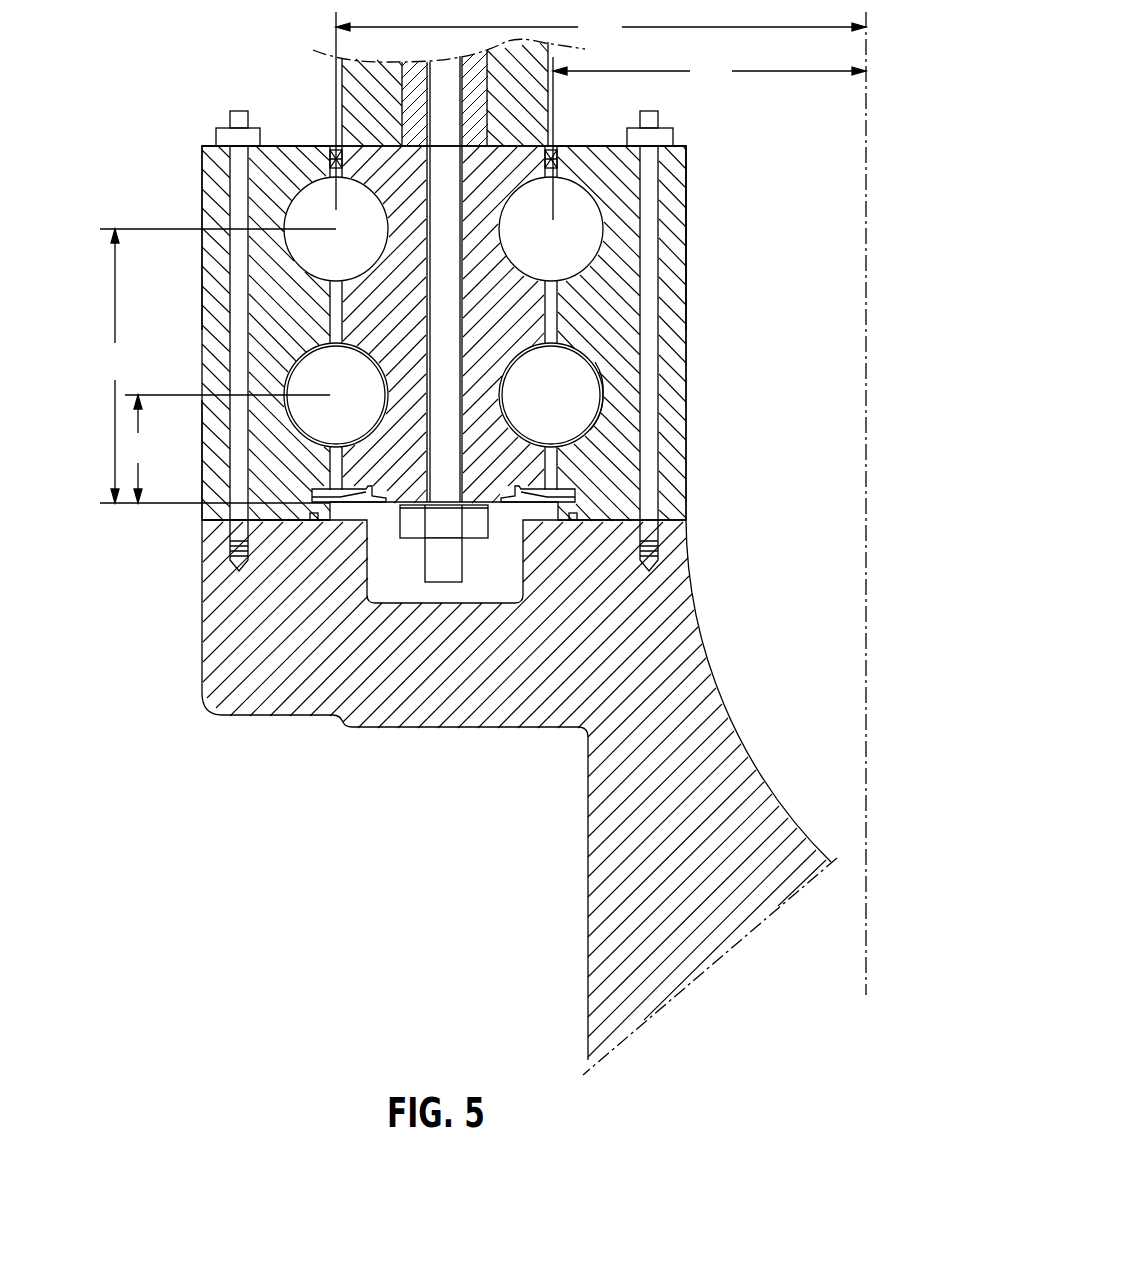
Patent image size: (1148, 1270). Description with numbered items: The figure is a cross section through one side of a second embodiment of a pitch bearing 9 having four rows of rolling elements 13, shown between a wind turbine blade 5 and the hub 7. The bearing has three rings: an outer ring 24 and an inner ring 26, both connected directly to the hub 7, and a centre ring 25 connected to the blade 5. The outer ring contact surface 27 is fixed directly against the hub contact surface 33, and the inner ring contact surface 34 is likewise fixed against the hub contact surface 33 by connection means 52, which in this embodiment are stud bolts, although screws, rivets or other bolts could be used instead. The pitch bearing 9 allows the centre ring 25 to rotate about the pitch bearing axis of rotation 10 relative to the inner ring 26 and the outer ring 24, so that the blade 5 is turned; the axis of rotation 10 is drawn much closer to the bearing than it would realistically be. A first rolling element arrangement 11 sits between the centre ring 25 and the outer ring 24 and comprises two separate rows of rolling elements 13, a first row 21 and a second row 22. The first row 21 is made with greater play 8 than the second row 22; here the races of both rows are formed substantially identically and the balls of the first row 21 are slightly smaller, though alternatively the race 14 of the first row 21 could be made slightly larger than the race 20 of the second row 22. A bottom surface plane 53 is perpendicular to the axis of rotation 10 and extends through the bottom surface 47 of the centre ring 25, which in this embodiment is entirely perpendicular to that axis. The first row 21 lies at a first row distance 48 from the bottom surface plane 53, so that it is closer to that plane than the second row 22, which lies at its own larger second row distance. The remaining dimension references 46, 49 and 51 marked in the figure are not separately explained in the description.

The blade 5 is at (368, 113).
The hub 7 is at (698, 794).
The play 8 is at (595, 362).
The pitch bearing 9 is at (136, 105).
The pitch bearing axis of rotation 10 is at (862, 523).
The first rolling element arrangement 11 is at (330, 173).
The rolling elements 13 is at (553, 229).
The race 14 is at (607, 230).
The race 20 is at (597, 393).
The first row of rolling elements 21 is at (659, 395).
The second row of rolling elements 22 is at (666, 207).
The outer ring 24 is at (620, 280).
The centre ring 25 is at (384, 477).
The inner ring 26 is at (272, 272).
The outer ring contact surface 27 is at (290, 520).
The hub contact surface 33 is at (290, 505).
The inner ring contact surface 34 is at (647, 557).
The radial distance 46 is at (601, 111).
The bottom surface 47 is at (388, 505).
The first row distance 48 is at (226, 449).
The axial distance 49 is at (218, 366).
The radial distance 51 is at (709, 138).
The connection means 52 is at (447, 108).
The bottom surface plane 53 is at (177, 505).